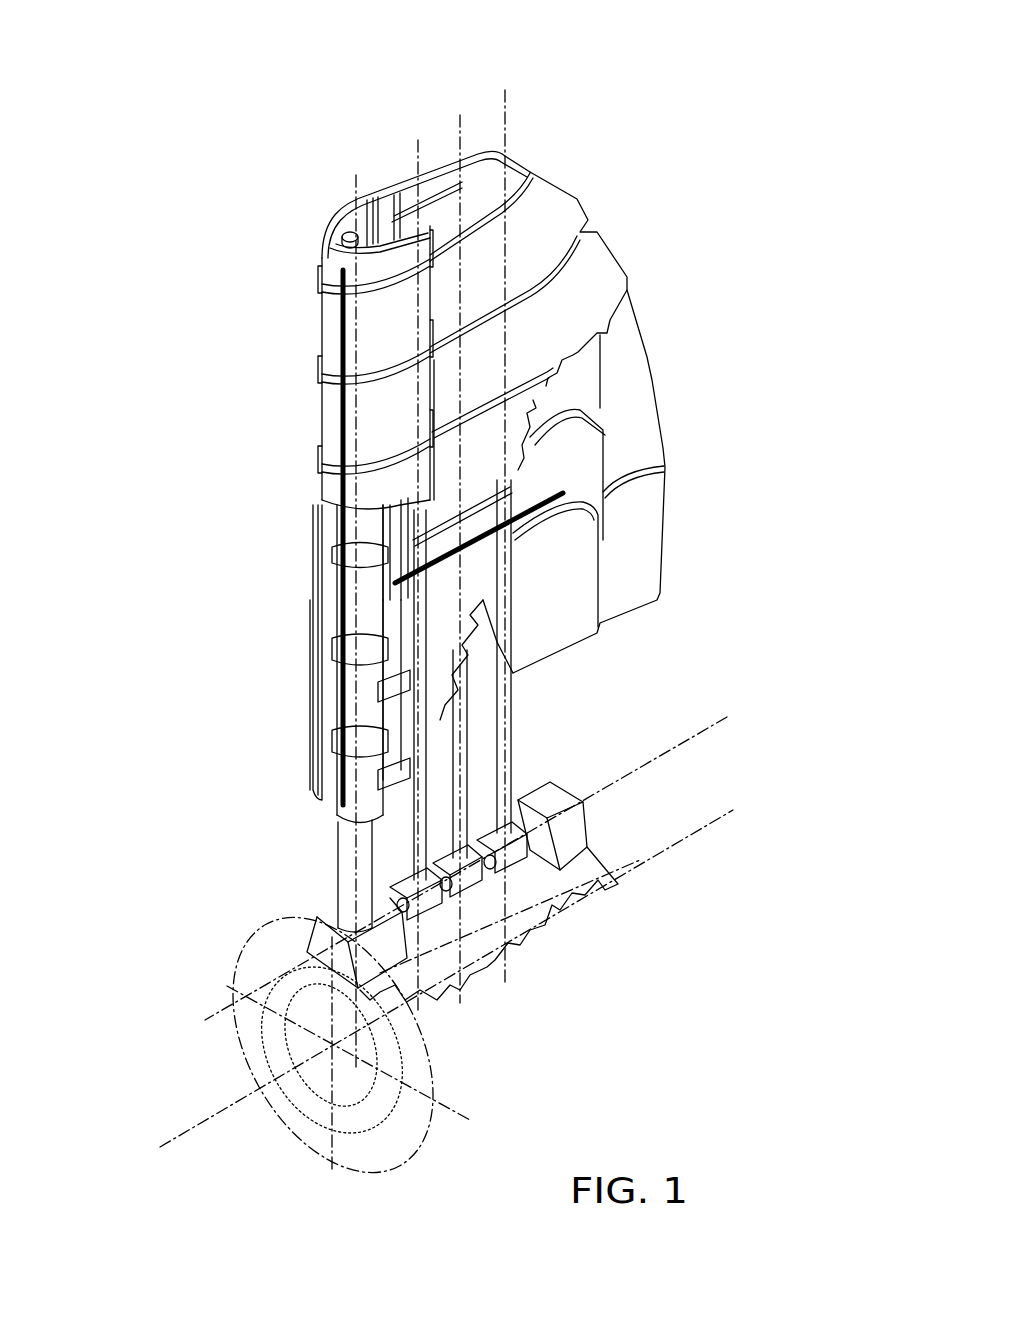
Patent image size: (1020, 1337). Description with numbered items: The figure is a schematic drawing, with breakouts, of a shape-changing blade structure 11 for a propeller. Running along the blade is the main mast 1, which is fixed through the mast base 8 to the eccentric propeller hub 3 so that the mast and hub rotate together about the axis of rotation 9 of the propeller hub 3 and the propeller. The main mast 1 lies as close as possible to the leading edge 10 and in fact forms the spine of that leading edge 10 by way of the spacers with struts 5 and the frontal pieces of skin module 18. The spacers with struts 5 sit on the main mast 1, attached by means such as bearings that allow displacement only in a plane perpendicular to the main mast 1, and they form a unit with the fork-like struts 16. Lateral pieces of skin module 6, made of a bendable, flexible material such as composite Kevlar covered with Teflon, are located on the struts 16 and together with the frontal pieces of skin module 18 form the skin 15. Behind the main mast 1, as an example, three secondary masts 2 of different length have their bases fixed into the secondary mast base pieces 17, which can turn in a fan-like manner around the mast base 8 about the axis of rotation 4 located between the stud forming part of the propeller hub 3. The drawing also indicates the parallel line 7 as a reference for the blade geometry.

The main mast 1 is at (340, 218).
The secondary masts 2 is at (505, 90).
The eccentric propeller hub 3 is at (600, 888).
The axis of rotation 4 is at (707, 731).
The spacers with struts 5 is at (312, 617).
The lateral pieces of skin module 6 is at (597, 268).
The parallel line 7 is at (495, 547).
The mast base 8 is at (320, 905).
The axis of rotation 9 is at (247, 1092).
The leading edge 10 is at (352, 440).
The shape-changing blade structure 11 is at (298, 222).
The skin 15 is at (578, 195).
The fork-like struts 16 is at (330, 778).
The secondary mast base pieces 17 is at (470, 873).
The frontal pieces of skin module 18 is at (322, 405).